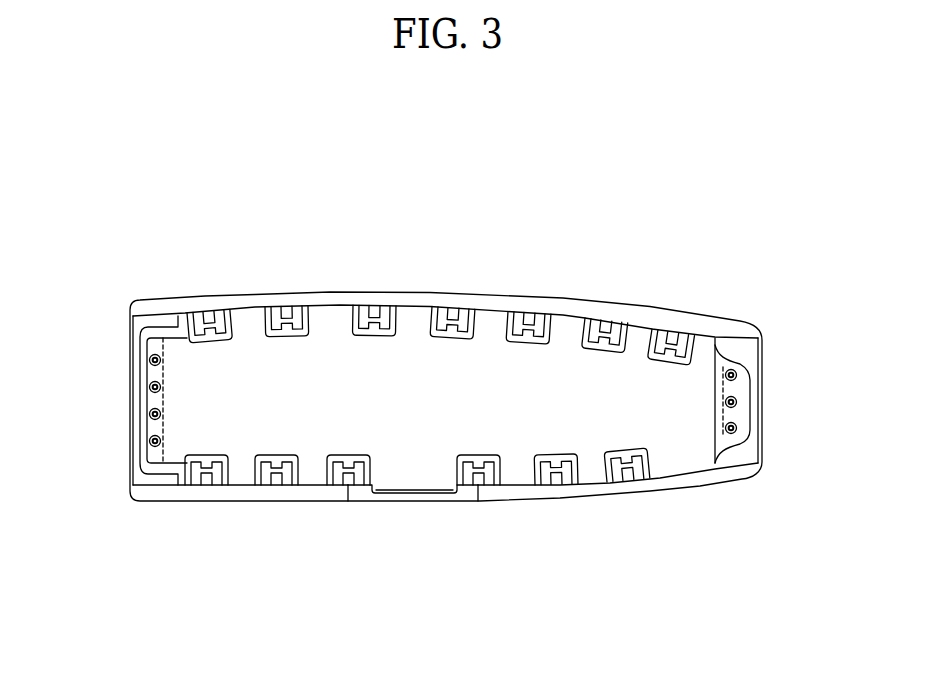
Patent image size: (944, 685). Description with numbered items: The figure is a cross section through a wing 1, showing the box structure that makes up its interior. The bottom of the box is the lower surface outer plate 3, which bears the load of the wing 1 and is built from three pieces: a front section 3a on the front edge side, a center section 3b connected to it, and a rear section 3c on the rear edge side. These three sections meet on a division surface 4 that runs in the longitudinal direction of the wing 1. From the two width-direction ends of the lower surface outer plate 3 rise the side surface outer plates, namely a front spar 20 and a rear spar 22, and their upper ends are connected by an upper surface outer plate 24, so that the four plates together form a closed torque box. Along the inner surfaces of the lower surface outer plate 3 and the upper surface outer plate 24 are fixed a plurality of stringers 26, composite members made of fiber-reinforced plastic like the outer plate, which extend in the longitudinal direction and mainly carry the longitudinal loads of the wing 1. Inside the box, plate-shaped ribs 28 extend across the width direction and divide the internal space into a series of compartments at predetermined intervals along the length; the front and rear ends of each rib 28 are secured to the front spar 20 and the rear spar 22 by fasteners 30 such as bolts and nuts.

The wing 1 is at (634, 222).
The lower surface outer plate 3 is at (445, 558).
The front section 3a is at (199, 493).
The center section 3b is at (420, 495).
The rear section 3c is at (584, 494).
The division surface 4 is at (348, 501).
The front spar 20 is at (130, 367).
The rear spar 22 is at (756, 352).
The upper surface outer plate 24 is at (353, 295).
The stringers 26 is at (292, 338).
The ribs 28 is at (393, 408).
The fasteners 30 is at (160, 410).